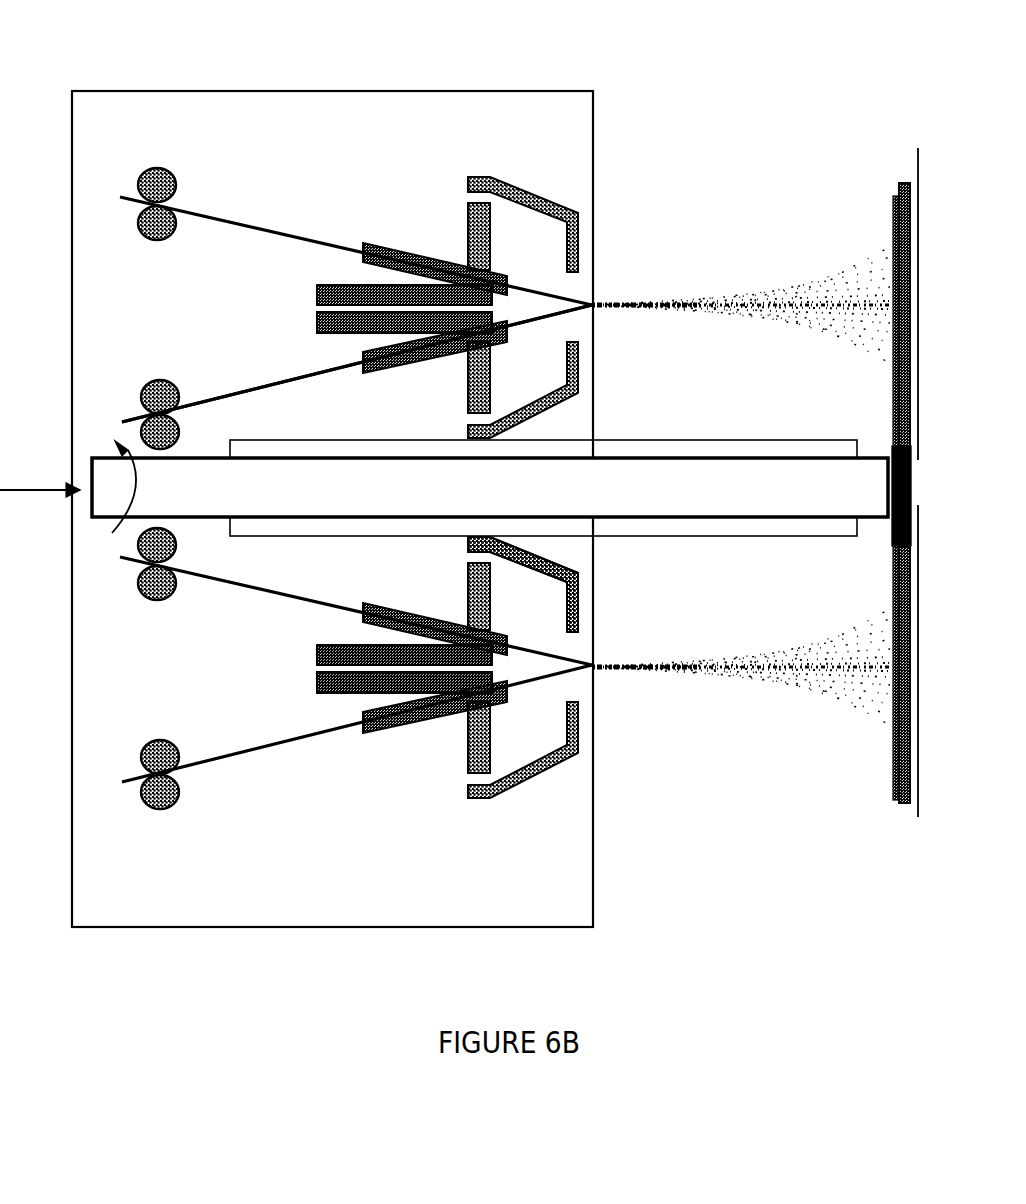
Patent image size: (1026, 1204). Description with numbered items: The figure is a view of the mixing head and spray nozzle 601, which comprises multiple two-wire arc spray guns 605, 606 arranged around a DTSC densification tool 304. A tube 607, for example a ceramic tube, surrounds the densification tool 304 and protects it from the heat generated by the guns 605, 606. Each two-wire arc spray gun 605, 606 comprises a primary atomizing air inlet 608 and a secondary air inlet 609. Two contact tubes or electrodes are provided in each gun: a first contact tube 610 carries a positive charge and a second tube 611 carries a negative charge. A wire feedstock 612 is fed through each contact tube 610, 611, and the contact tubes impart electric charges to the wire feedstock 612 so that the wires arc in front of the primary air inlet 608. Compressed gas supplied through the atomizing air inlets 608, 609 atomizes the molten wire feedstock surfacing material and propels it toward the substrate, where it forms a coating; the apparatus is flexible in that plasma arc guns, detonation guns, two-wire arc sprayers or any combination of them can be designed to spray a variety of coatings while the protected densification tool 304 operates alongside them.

The mixing head and spray nozzle 601 is at (100, 91).
The two-wire arc spray gun 605 is at (512, 138).
The two-wire arc spray gun 606 is at (493, 828).
The first contact tube 610 is at (405, 262).
The second tube 611 is at (435, 362).
The wire feedstock 612 is at (268, 392).
The primary atomizing air inlet 608 is at (314, 668).
The secondary air inlet 609 is at (456, 553).
The tube 607 is at (748, 533).
The DTSC tool 304 is at (745, 458).